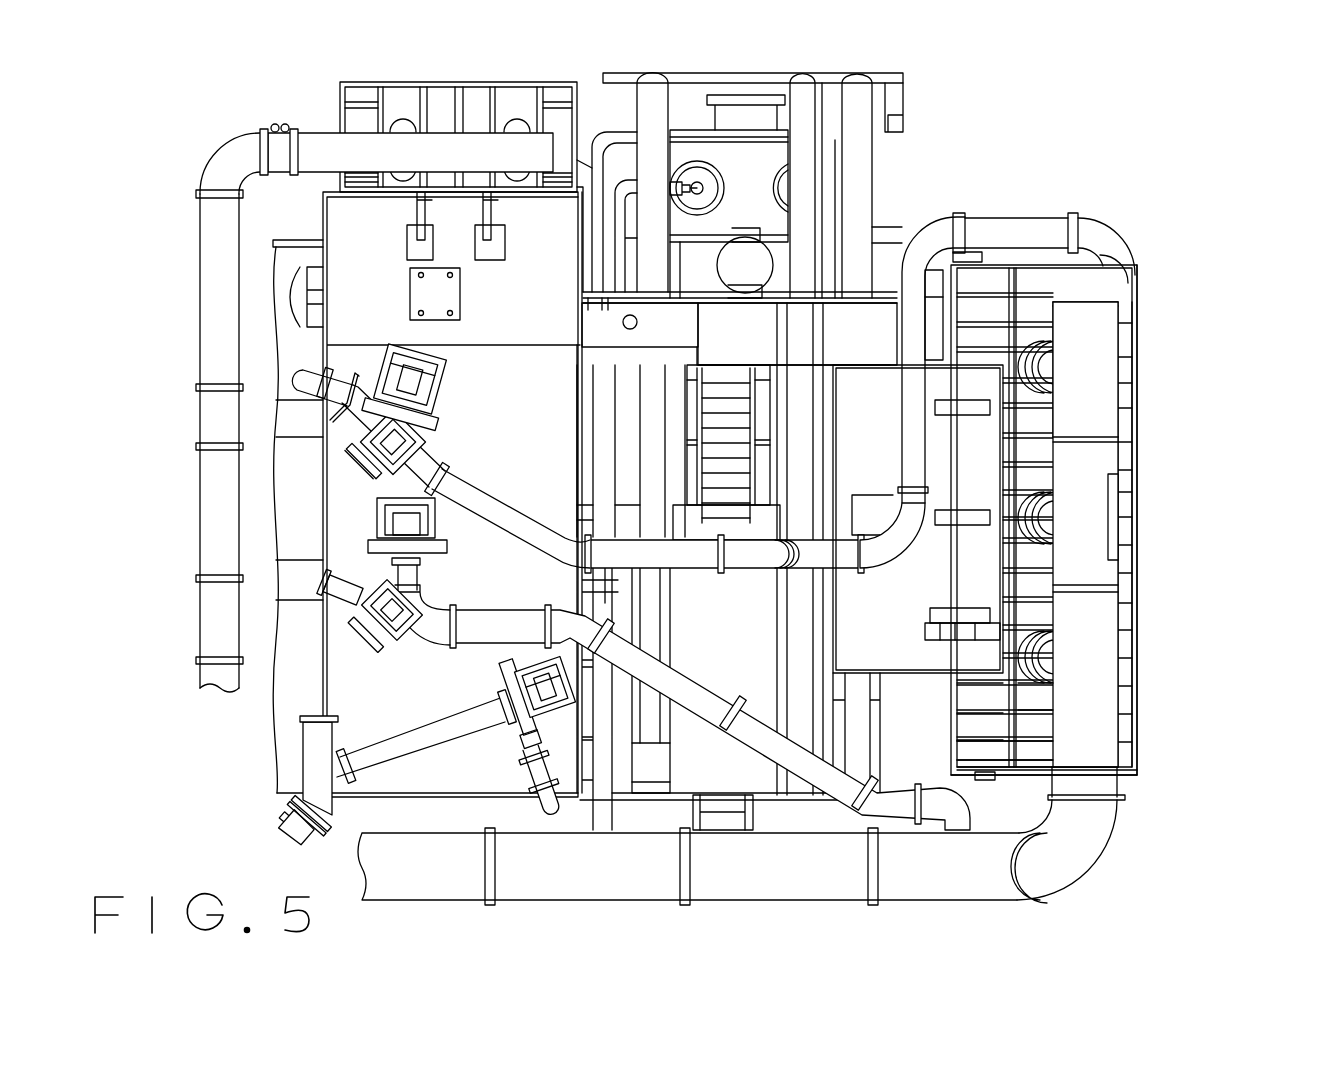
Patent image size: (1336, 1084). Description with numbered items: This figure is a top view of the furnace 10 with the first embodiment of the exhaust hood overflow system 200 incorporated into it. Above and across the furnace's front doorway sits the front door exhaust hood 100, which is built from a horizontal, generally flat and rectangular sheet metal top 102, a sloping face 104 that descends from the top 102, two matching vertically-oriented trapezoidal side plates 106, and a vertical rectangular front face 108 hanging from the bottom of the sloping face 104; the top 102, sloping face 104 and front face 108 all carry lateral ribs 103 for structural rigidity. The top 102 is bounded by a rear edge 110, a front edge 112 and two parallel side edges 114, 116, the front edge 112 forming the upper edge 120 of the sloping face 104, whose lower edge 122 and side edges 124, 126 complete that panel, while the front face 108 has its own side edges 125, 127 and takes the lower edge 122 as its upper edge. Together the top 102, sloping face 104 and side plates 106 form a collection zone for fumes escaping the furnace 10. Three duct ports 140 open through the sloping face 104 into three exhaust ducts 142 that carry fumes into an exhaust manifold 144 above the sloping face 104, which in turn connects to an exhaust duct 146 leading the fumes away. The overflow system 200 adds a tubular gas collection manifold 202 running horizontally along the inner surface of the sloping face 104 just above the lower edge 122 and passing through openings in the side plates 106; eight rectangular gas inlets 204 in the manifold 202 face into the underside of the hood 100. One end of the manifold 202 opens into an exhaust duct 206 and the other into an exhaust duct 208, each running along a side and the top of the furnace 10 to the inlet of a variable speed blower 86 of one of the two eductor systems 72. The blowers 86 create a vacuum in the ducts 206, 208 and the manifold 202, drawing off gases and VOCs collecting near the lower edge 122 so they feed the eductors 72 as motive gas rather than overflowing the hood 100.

The furnace 10 is at (165, 208).
The eductor system 72 is at (456, 440).
The variable speed blower 86 is at (377, 497).
The front door exhaust hood 100 is at (1178, 294).
The top 102 is at (985, 322).
The lateral ribs 103 is at (992, 282).
The sloping face 104 is at (1087, 293).
The side plates 106 is at (1053, 265).
The front face 108 is at (1147, 557).
The rear edge 110 is at (957, 720).
The front edge 112 is at (1017, 722).
The side edge 114 is at (980, 773).
The side edge 116 is at (975, 253).
The upper edge 120 is at (1013, 697).
The lower edge 122 is at (1133, 672).
The side edge 124 is at (1020, 770).
The side edge 125 is at (1133, 775).
The side edge 126 is at (1085, 248).
The side edge 127 is at (1060, 345).
The duct ports 140 is at (1027, 625).
The exhaust ducts 142 is at (1047, 657).
The exhaust manifold 144 is at (1100, 318).
The exhaust duct 146 is at (598, 880).
The exhaust hood overflow system 200 is at (1158, 340).
The gas collection manifold 202 is at (1133, 635).
The gas inlets 204 is at (1118, 355).
The exhaust duct 206 is at (805, 760).
The exhaust duct 208 is at (747, 553).